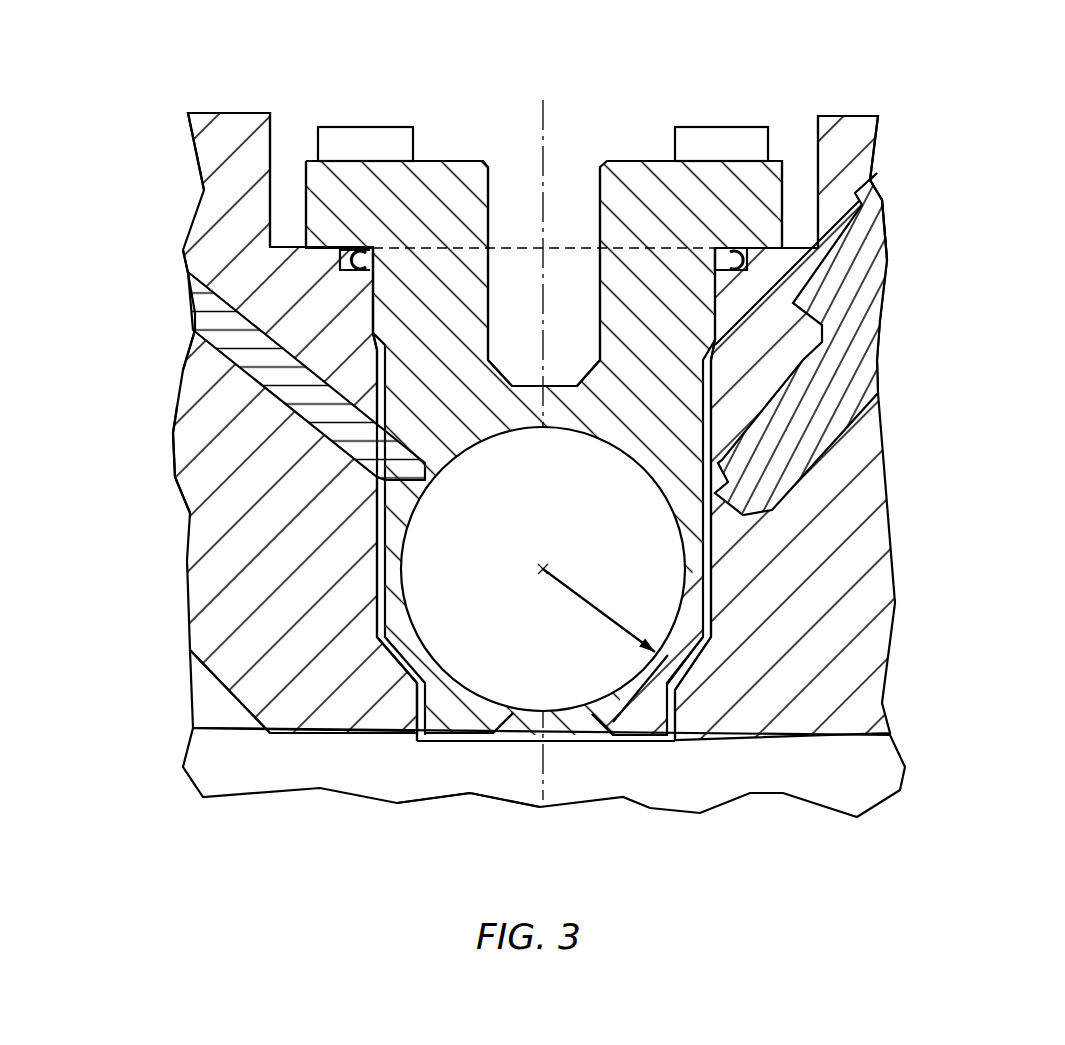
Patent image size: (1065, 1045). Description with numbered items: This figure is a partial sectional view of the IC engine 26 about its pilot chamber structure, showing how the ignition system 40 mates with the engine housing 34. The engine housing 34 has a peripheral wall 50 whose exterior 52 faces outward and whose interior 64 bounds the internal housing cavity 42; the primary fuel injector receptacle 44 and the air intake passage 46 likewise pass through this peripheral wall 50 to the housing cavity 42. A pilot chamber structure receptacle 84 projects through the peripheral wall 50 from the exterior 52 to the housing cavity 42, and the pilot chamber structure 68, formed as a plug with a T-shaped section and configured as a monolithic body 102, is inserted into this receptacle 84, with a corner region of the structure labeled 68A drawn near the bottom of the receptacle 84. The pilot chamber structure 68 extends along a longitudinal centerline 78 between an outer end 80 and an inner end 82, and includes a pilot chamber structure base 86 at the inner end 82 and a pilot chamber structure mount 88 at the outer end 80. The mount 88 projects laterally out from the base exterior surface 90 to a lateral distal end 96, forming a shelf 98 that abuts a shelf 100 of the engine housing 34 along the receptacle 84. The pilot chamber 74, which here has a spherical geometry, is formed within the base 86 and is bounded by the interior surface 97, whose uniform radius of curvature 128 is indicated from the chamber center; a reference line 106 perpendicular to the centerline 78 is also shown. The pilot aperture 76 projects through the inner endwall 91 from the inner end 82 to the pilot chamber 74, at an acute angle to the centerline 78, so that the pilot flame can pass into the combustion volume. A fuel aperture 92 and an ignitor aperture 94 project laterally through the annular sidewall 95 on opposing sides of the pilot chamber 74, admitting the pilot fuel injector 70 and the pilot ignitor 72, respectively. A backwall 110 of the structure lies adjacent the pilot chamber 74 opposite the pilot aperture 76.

The IC engine 26 is at (963, 114).
The engine housing 34 is at (160, 594).
The ignition system 40 is at (826, 95).
The internal housing cavity 42 is at (205, 760).
The primary fuel injector receptacle 44 is at (213, 706).
The air intake passage 46 is at (544, 772).
The peripheral wall 50 is at (200, 541).
The exterior 52 is at (213, 113).
The interior 64 is at (278, 735).
The pilot chamber structure 68 is at (447, 765).
The recess corner 68A is at (405, 727).
The pilot fuel injector 70 is at (902, 312).
The pilot ignitor 72 is at (176, 281).
The pilot chamber 74 is at (608, 544).
The pilot aperture 76 is at (600, 733).
The longitudinal centerline 78 is at (543, 102).
The outer end 80 is at (460, 161).
The inner end 82 is at (641, 742).
The pilot chamber structure receptacle 84 is at (372, 328).
The pilot chamber structure base 86 is at (456, 352).
The pilot chamber structure mount 88 is at (456, 214).
The exterior surface 90 is at (392, 522).
The inner endwall 91 is at (468, 720).
The fuel aperture 92 is at (693, 512).
The ignitor aperture 94 is at (403, 520).
The annular sidewall 95 is at (388, 600).
The lateral distal end 96 is at (302, 168).
The interior surface 97 is at (408, 553).
The shelf 98 is at (335, 258).
The shelf 100 is at (292, 168).
The monolithic body 102 is at (627, 157).
The reference line 106 is at (348, 574).
The backwall 110 is at (553, 407).
The radius of curvature 128 is at (628, 632).